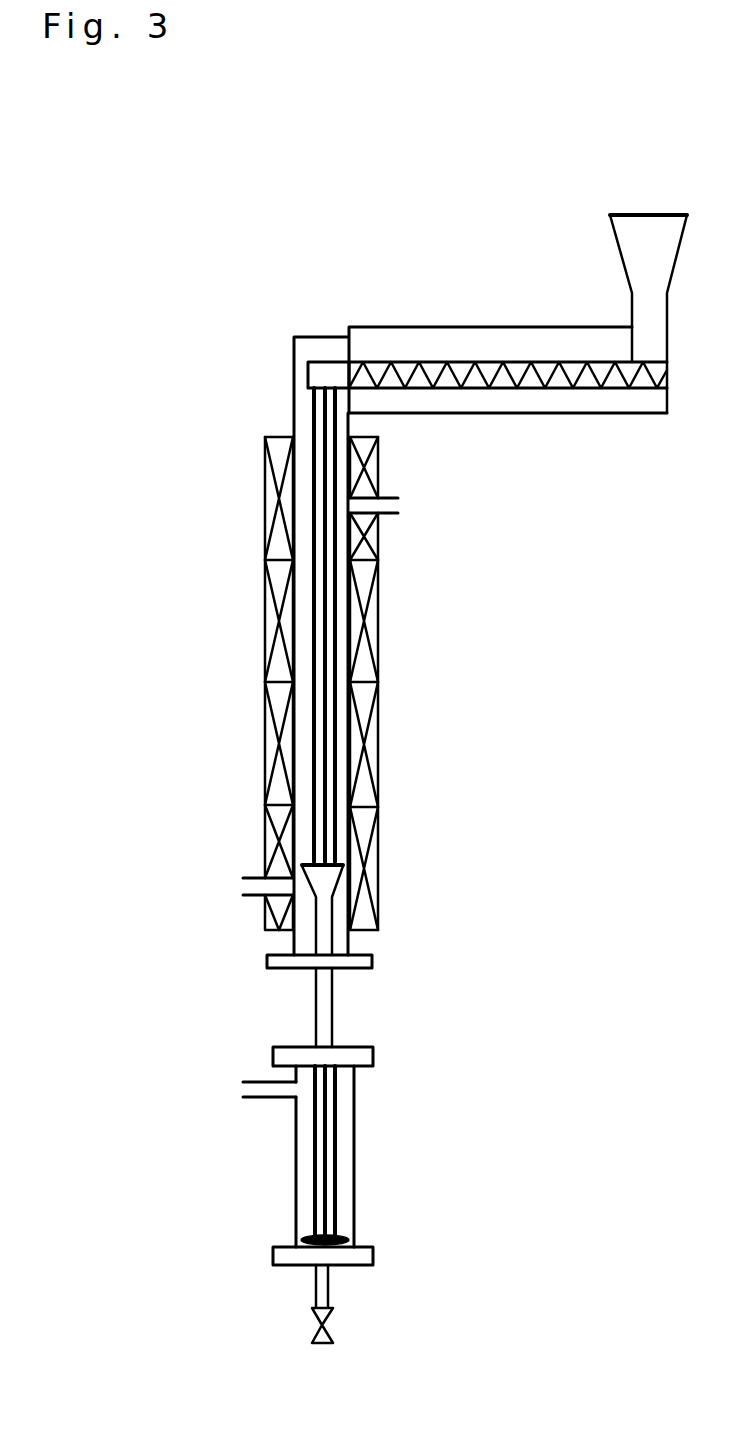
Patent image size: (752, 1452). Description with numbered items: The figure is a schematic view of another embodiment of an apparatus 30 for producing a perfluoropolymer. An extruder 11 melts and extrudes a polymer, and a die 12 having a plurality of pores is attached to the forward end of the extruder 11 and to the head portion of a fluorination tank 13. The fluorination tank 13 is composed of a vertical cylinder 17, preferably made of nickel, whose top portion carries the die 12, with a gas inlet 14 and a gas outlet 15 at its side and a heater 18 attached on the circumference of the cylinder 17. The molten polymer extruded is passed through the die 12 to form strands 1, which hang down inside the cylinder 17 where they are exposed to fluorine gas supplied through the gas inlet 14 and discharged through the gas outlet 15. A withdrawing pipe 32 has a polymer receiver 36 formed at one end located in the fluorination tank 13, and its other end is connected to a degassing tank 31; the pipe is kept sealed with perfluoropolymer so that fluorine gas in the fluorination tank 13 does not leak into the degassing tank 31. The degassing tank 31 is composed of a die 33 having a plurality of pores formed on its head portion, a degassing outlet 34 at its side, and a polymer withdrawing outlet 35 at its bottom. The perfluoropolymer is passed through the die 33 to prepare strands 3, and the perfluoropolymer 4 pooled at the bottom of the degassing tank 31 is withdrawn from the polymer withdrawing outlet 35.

The apparatus for producing a perfluoropolymer 30 is at (228, 212).
The die 12 is at (322, 362).
The extruder 11 is at (487, 327).
The vertical cylinder 17 is at (293, 393).
The gas inlet 14 is at (393, 497).
The fluorination tank 13 is at (390, 581).
The heater 18 is at (265, 647).
The strands 1 is at (335, 760).
The gas outlet 15 is at (252, 876).
The polymer receiver 36 is at (325, 884).
The withdrawing pipe 32 is at (333, 1002).
The die 33 is at (374, 1057).
The strands 3 is at (340, 1115).
The degassing tank 31 is at (356, 1143).
The degassing outlet 34 is at (262, 1100).
The perfluoropolymer 4 is at (338, 1234).
The polymer withdrawing outlet 35 is at (340, 1282).